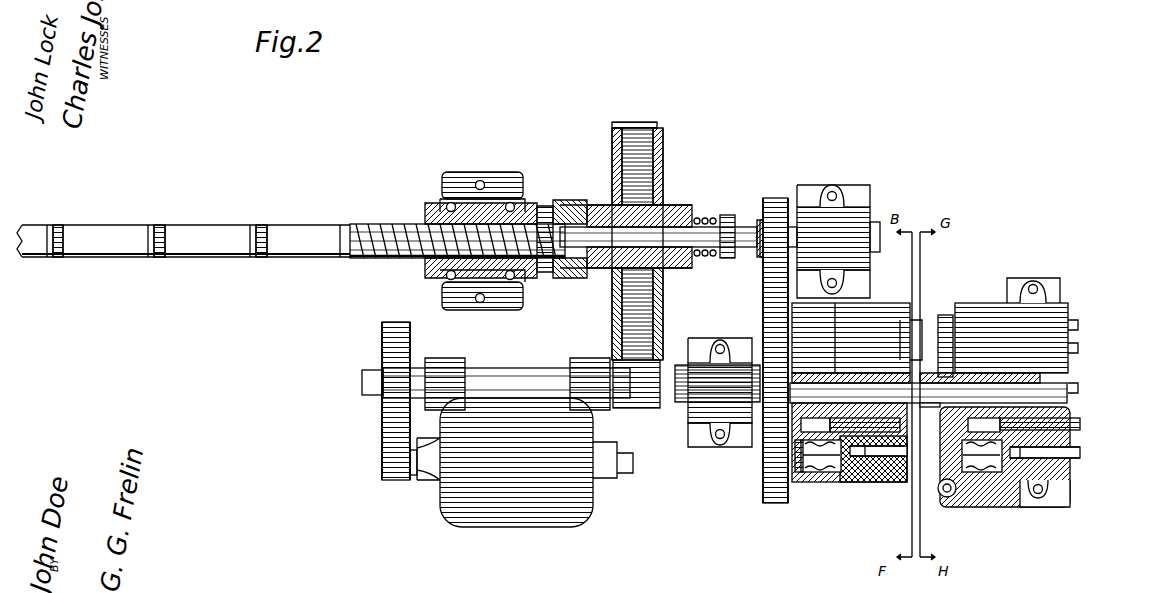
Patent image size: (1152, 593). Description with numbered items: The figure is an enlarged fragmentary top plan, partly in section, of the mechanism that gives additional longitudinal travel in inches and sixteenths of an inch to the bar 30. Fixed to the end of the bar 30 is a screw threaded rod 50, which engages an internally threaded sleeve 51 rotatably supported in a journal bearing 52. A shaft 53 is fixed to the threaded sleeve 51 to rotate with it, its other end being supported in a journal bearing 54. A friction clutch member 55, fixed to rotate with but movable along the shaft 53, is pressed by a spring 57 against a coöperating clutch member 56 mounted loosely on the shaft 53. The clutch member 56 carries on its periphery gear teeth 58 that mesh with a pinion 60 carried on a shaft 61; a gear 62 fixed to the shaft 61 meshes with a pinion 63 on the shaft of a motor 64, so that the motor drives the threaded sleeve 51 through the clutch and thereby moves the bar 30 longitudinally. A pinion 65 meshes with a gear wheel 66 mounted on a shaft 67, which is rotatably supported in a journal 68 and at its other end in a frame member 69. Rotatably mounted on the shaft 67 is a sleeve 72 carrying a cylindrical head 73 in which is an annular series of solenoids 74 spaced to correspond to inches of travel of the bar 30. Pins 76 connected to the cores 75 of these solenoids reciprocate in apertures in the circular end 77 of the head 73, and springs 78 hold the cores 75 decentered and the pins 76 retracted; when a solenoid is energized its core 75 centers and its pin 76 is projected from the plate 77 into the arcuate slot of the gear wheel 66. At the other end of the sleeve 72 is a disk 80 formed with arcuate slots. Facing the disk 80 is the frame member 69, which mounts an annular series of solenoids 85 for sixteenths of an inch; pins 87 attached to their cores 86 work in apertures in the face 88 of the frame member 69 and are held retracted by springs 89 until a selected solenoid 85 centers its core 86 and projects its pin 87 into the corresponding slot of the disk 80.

The bar 30 is at (220, 258).
The screw threaded rod 50 is at (372, 224).
The internally threaded sleeve 51 is at (425, 208).
The journal bearing 52 is at (487, 196).
The shaft 53 is at (700, 227).
The journal bearing 54 is at (848, 210).
The friction clutch member 55 is at (664, 155).
The coöperating clutch member 56 is at (612, 140).
The spring 57 is at (728, 215).
The gear teeth 58 is at (637, 122).
The pinion 60 is at (637, 410).
The shaft 61 is at (510, 368).
The gear 62 is at (382, 335).
The pinion 63 is at (392, 478).
The motor 64 is at (513, 527).
The pinion 65 is at (770, 198).
The gear wheel 66 is at (763, 480).
The shaft 67 is at (1045, 390).
The journal 68 is at (690, 425).
The frame member 69 is at (1035, 310).
The sleeve 72 is at (920, 360).
The cylindrical head 73 is at (830, 482).
The solenoids 74 is at (860, 482).
The cores 75 is at (880, 482).
The pins 76 is at (812, 472).
The circular end 77 is at (762, 452).
The springs 78 is at (800, 482).
The disk 80 is at (945, 315).
The solenoids 85 is at (1055, 504).
The cores 86 is at (1080, 453).
The pins 87 is at (975, 472).
The face 88 is at (948, 446).
The springs 89 is at (995, 472).